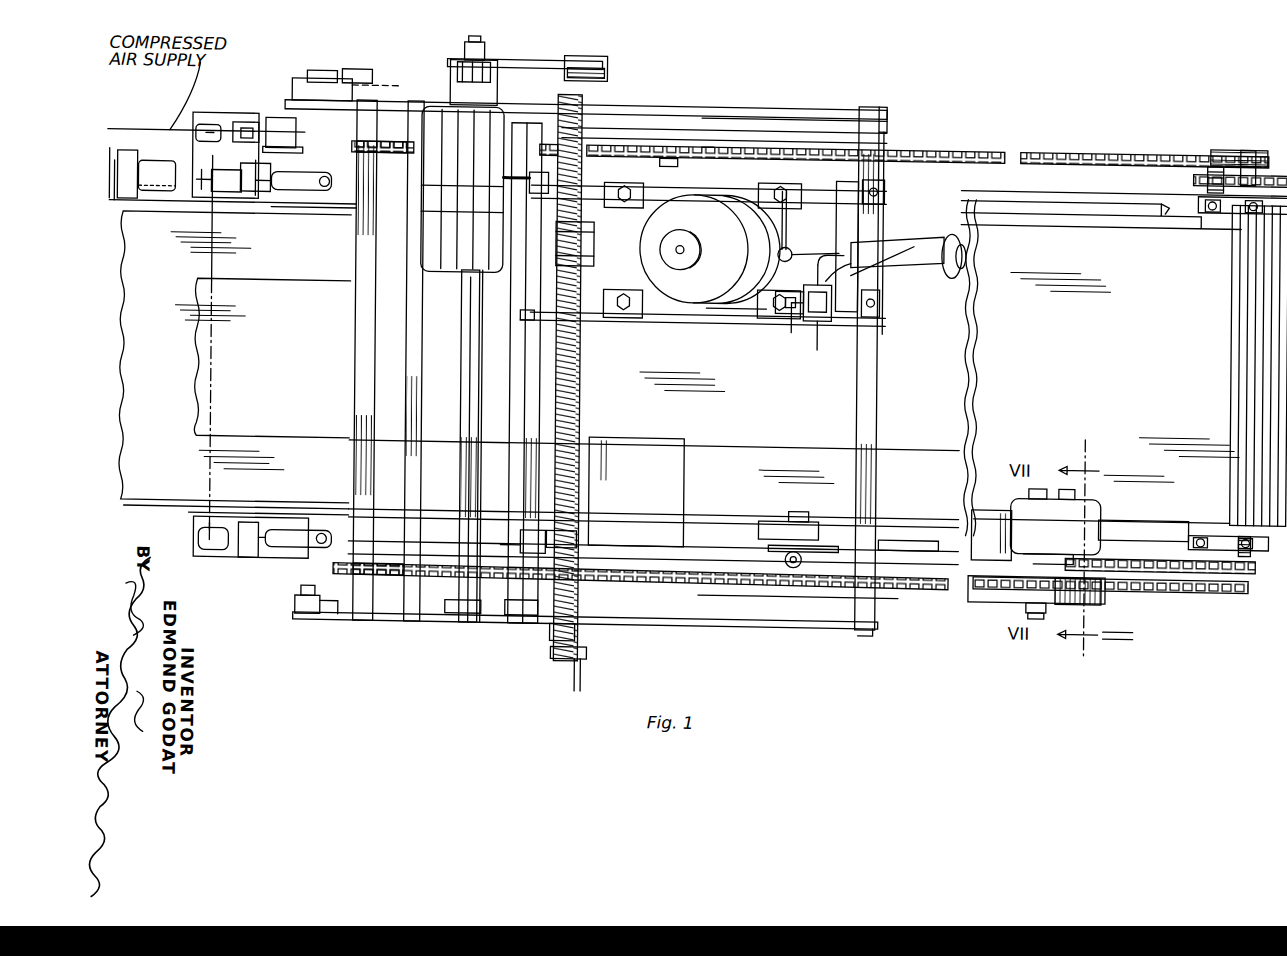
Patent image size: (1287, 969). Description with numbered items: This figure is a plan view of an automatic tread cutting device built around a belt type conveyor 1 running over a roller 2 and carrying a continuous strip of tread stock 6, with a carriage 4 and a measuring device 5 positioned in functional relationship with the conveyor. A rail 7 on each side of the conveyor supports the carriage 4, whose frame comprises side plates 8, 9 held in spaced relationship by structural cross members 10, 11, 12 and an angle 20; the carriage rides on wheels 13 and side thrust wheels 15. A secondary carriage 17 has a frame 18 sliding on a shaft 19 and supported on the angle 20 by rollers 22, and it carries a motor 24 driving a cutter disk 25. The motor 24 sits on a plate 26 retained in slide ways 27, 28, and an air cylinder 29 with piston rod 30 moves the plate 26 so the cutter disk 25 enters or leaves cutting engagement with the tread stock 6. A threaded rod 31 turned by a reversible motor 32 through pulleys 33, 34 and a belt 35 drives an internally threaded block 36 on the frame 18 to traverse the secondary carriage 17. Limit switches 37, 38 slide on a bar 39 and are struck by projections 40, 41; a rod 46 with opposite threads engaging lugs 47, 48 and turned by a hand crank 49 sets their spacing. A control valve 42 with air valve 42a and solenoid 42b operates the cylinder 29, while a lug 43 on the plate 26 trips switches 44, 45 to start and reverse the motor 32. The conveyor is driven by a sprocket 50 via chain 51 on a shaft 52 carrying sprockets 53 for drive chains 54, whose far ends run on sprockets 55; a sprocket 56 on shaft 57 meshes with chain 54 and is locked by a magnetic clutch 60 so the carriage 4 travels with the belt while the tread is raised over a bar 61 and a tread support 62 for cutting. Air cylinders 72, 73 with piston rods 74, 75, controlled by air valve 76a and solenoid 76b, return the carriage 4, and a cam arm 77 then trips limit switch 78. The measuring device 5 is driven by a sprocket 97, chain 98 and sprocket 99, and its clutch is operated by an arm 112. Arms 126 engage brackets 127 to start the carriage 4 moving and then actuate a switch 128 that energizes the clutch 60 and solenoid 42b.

The belt type conveyor 1 is at (1130, 232).
The roller 2 is at (1196, 206).
The carriage 4 is at (482, 648).
The measuring device 5 is at (972, 617).
The tread stock 6 is at (197, 443).
The rail 7 is at (895, 545).
The side plate 8 is at (386, 630).
The side plate 9 is at (705, 107).
The structural cross member 10 is at (355, 377).
The structural cross member 11 is at (406, 376).
The structural cross member 12 is at (497, 393).
The wheel 13 is at (806, 525).
The side thrust wheel 15 is at (798, 565).
The secondary carriage 17 is at (671, 153).
The frame 18 is at (838, 184).
The shaft 19 is at (525, 421).
The structural angle 20 is at (875, 461).
The roller 22 is at (870, 182).
The motor 24 is at (690, 289).
The cutter disk 25 is at (790, 332).
The plate 26 is at (744, 358).
The slide way 27 is at (654, 296).
The slide way 28 is at (618, 183).
The air cylinder 29 is at (960, 262).
The piston rod 30 is at (830, 177).
The threaded rod 31 is at (580, 448).
The reversible motor 32 is at (440, 119).
The pulley 33 is at (454, 64).
The pulley 34 is at (590, 58).
The belt 35 is at (530, 62).
The internally threaded block 36 is at (583, 286).
The limit switch 37 is at (532, 554).
The limit switch 38 is at (530, 190).
The bar 39 is at (573, 581).
The projection 40 is at (520, 323).
The projection 41 is at (528, 180).
The control valve 42 is at (817, 333).
The air valve 42a is at (818, 317).
The operating solenoid 42b is at (790, 312).
The lug 43 is at (753, 217).
The electrical switch 44 is at (707, 146).
The switch 45 is at (772, 185).
The rod 46 is at (574, 594).
The lug 47 is at (582, 547).
The lug 48 is at (678, 143).
The hand crank 49 is at (572, 687).
The sprocket 50 is at (1207, 155).
The chain 51 is at (1276, 163).
The shaft 52 is at (1230, 138).
The sprocket 53 is at (1234, 140).
The drive chain 54 is at (1049, 143).
The sprocket 55 is at (381, 572).
The sprocket 56 is at (453, 606).
The shaft 57 is at (471, 473).
The magnetic clutch 60 is at (480, 42).
The bar 61 is at (593, 479).
The tread support 62 is at (684, 465).
The air cylinder 72 is at (217, 557).
The air cylinder 73 is at (154, 175).
The piston rod 74 is at (282, 553).
The piston rod 75 is at (275, 200).
The air valve 76a is at (208, 124).
The solenoid 76b is at (253, 155).
The cam arm 77 is at (262, 126).
The limit switch 78 is at (270, 129).
The sprocket 97 is at (1212, 568).
The chain 98 is at (1152, 567).
The sprocket 99 is at (1100, 547).
The arm 112 is at (998, 500).
The arm 126 is at (303, 620).
The bracket 127 is at (335, 619).
The switch 128 is at (300, 100).